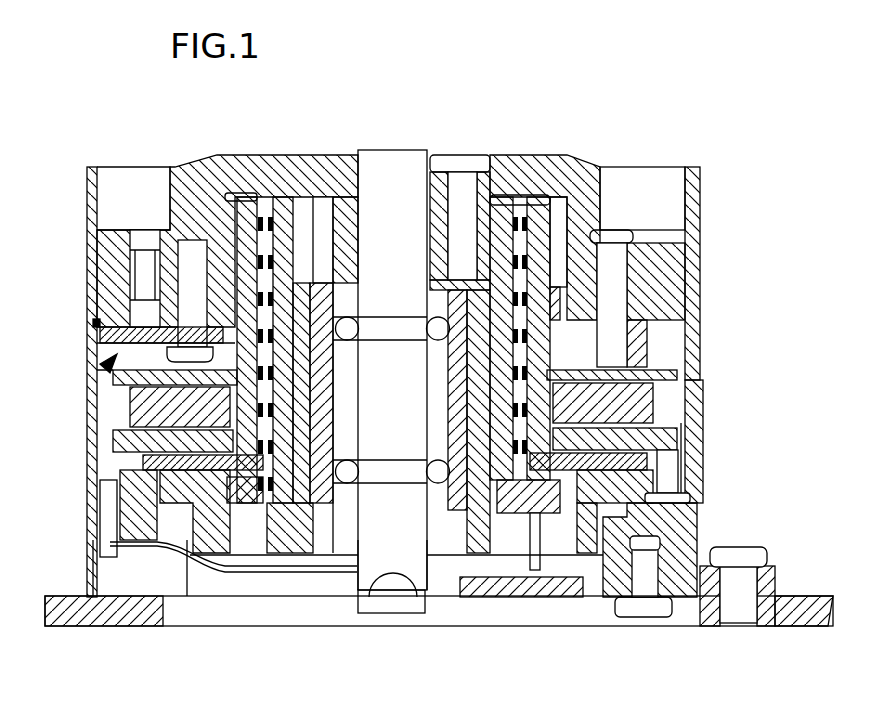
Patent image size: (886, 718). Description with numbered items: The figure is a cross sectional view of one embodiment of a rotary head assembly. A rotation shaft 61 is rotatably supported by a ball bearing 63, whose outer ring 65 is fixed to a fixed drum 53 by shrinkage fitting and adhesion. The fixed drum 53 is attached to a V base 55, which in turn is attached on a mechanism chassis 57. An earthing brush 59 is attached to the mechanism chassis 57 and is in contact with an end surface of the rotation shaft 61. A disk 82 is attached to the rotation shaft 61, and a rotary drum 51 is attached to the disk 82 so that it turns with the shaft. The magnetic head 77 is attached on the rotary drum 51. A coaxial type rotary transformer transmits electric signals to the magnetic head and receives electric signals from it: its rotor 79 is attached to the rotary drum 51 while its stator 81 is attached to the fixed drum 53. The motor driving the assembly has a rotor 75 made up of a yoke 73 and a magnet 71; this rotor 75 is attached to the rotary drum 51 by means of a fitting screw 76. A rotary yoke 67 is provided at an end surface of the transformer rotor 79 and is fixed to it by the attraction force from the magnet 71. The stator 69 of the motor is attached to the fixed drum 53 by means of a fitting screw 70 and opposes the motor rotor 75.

The rotary drum 51 is at (690, 260).
The fixed drum 53 is at (700, 400).
The V base 55 is at (683, 533).
The mechanism chassis 57 is at (792, 623).
The earthing brush 59 is at (398, 585).
The rotation shaft 61 is at (367, 537).
The ball bearing 63 is at (438, 503).
The outer ring 65 is at (320, 298).
The rotary yoke 67 is at (97, 465).
The stator of the motor 69 is at (97, 440).
The fitting screw 70 is at (670, 486).
The magnet 71 is at (113, 415).
The yoke 73 is at (117, 395).
The rotor of the motor 75 is at (105, 363).
The fitting screw 76 is at (620, 240).
The magnetic head 77 is at (97, 323).
The rotor of the rotary transformer 79 is at (240, 198).
The stator of the rotary transformer 81 is at (280, 197).
The disk 82 is at (430, 205).